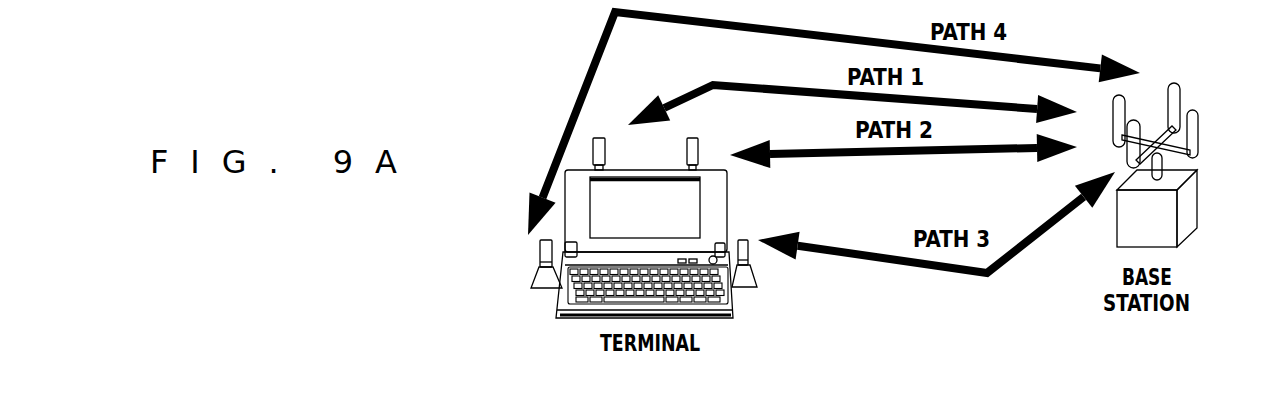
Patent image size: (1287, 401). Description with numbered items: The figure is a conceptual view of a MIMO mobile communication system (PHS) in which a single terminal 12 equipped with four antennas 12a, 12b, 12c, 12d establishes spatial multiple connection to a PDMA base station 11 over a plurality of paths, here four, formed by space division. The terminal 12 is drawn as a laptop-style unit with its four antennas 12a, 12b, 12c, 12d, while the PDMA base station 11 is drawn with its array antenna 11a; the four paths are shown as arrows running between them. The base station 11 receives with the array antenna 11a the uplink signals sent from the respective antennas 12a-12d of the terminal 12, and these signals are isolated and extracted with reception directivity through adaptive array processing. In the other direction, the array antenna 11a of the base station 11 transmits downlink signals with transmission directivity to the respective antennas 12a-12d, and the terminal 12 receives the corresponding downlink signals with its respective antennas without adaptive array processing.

The PDMA base station 11 is at (1120, 232).
The array antenna 11a is at (1184, 92).
The terminal 12 is at (720, 203).
The antenna 12a is at (606, 149).
The antenna 12b is at (700, 141).
The antenna 12c is at (750, 256).
The antenna 12d is at (540, 248).